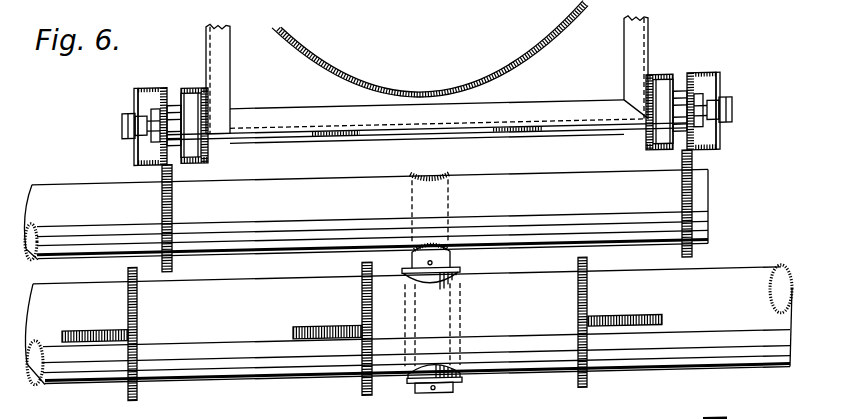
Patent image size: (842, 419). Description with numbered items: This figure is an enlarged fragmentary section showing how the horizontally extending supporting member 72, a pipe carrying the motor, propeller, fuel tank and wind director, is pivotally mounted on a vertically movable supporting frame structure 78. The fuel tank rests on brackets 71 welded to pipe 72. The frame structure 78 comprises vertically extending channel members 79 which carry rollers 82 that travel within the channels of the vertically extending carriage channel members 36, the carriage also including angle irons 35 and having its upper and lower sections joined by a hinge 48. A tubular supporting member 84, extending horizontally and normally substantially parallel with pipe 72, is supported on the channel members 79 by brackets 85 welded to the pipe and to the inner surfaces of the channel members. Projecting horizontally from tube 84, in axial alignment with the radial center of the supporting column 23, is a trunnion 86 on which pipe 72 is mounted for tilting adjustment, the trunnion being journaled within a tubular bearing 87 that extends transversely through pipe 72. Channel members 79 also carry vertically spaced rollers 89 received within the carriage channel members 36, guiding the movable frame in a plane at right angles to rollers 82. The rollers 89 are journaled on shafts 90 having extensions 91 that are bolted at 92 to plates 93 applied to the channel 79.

The supporting column 23 is at (385, 90).
The angle irons 35 is at (428, 418).
The channel members 36 is at (193, 83).
The hinge 48 is at (728, 414).
The brackets 71 is at (137, 328).
The supporting member 72 is at (690, 361).
The supporting frame structure 78 is at (730, 163).
The channel members 79 is at (152, 82).
The rollers 82 is at (173, 106).
The tubular supporting member 84 is at (515, 180).
The brackets 85 is at (172, 171).
The trunnion 86 is at (455, 258).
The tubular bearing 87 is at (462, 379).
The rollers 89 is at (205, 95).
The shafts 90 is at (213, 125).
The extensions 91 is at (152, 134).
The bolts 92 is at (124, 111).
The plates 93 is at (136, 88).